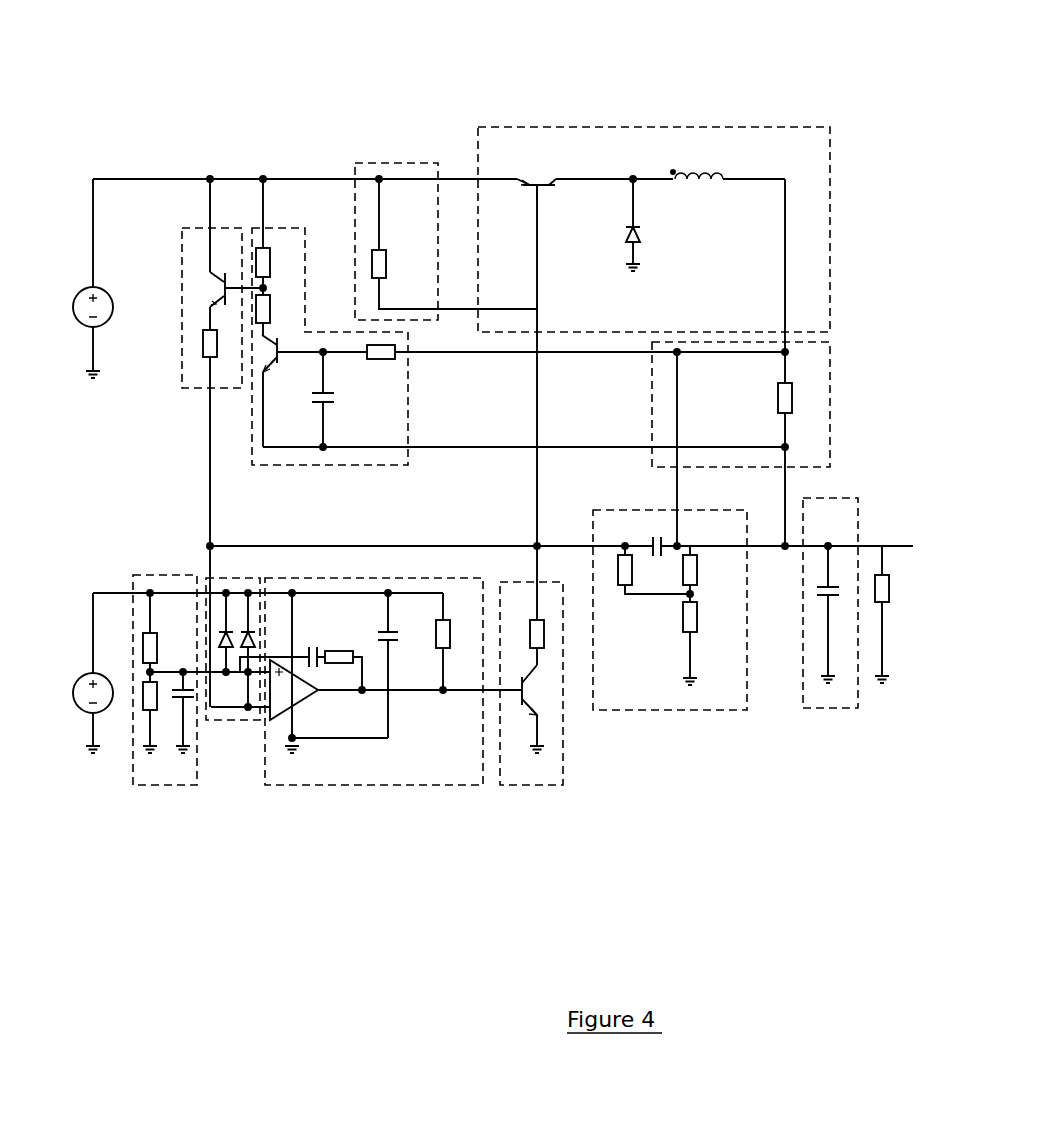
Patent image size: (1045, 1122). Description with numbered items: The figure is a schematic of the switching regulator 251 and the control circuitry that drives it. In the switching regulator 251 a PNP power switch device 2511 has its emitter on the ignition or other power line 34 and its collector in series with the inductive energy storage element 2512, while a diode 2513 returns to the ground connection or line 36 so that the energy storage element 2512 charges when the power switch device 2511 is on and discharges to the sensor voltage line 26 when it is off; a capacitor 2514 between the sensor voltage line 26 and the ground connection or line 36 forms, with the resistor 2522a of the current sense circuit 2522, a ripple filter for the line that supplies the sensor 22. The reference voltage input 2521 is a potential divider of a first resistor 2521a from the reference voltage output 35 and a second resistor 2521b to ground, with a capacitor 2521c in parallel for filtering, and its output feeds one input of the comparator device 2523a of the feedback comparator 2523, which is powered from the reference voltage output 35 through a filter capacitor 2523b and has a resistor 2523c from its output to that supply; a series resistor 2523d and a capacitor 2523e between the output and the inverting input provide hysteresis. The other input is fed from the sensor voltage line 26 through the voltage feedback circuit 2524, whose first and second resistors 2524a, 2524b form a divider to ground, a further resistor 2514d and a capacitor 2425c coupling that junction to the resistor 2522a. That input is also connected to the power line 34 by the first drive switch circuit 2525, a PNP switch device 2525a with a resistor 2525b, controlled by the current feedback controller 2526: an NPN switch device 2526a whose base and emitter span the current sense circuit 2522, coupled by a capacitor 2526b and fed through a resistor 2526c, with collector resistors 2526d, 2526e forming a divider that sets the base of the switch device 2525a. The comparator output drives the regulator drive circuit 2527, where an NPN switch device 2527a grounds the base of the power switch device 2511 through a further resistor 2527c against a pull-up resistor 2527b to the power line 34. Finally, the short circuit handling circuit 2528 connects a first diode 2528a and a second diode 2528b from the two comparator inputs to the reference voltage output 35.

The ignition or other power line 34 is at (173, 178).
The reference voltage output 35 is at (110, 590).
The ground connection or line 36 is at (652, 268).
The sensor 22 is at (895, 586).
The sensor voltage line 26 is at (907, 542).
The switching regulator 251 is at (670, 445).
The power switch device 2511 is at (533, 175).
The energy storage element 2512 is at (706, 160).
The diode 2513 is at (652, 232).
The capacitor 2514 is at (843, 578).
The further resistor 2514d is at (617, 566).
The reference voltage input 2521 is at (149, 723).
The first resistor 2521a is at (140, 647).
The second resistor 2521b is at (140, 693).
The capacitor 2521c is at (190, 706).
The current sense circuit 2522 is at (792, 430).
The resistor 2522a is at (796, 397).
The feedback comparator 2523 is at (389, 725).
The comparator device 2523a is at (282, 689).
The filter capacitor 2523b is at (378, 648).
The resistor 2523c is at (434, 633).
The series resistor 2523d is at (312, 645).
The capacitor 2523e is at (341, 640).
The voltage feedback circuit 2524 is at (684, 708).
The first resistor 2524a is at (702, 567).
The second resistor 2524b is at (677, 621).
The capacitor 2425c is at (657, 532).
The first drive switch circuit 2525 is at (163, 317).
The switch device 2525a is at (212, 290).
The resistor 2525b is at (198, 343).
The current feedback controller 2526 is at (454, 324).
The switch device 2526a is at (258, 352).
The capacitor 2526b is at (343, 398).
The resistor 2526c is at (383, 363).
The resistor 2526d is at (255, 259).
The resistor 2526e is at (277, 306).
The regulator drive circuit 2527 is at (465, 480).
The switch device 2527a is at (541, 690).
The pull-up resistor 2527b is at (530, 613).
The further resistor 2527c is at (390, 257).
The short circuit handling circuit 2528 is at (239, 611).
The first diode 2528a is at (225, 625).
The second diode 2528b is at (249, 625).